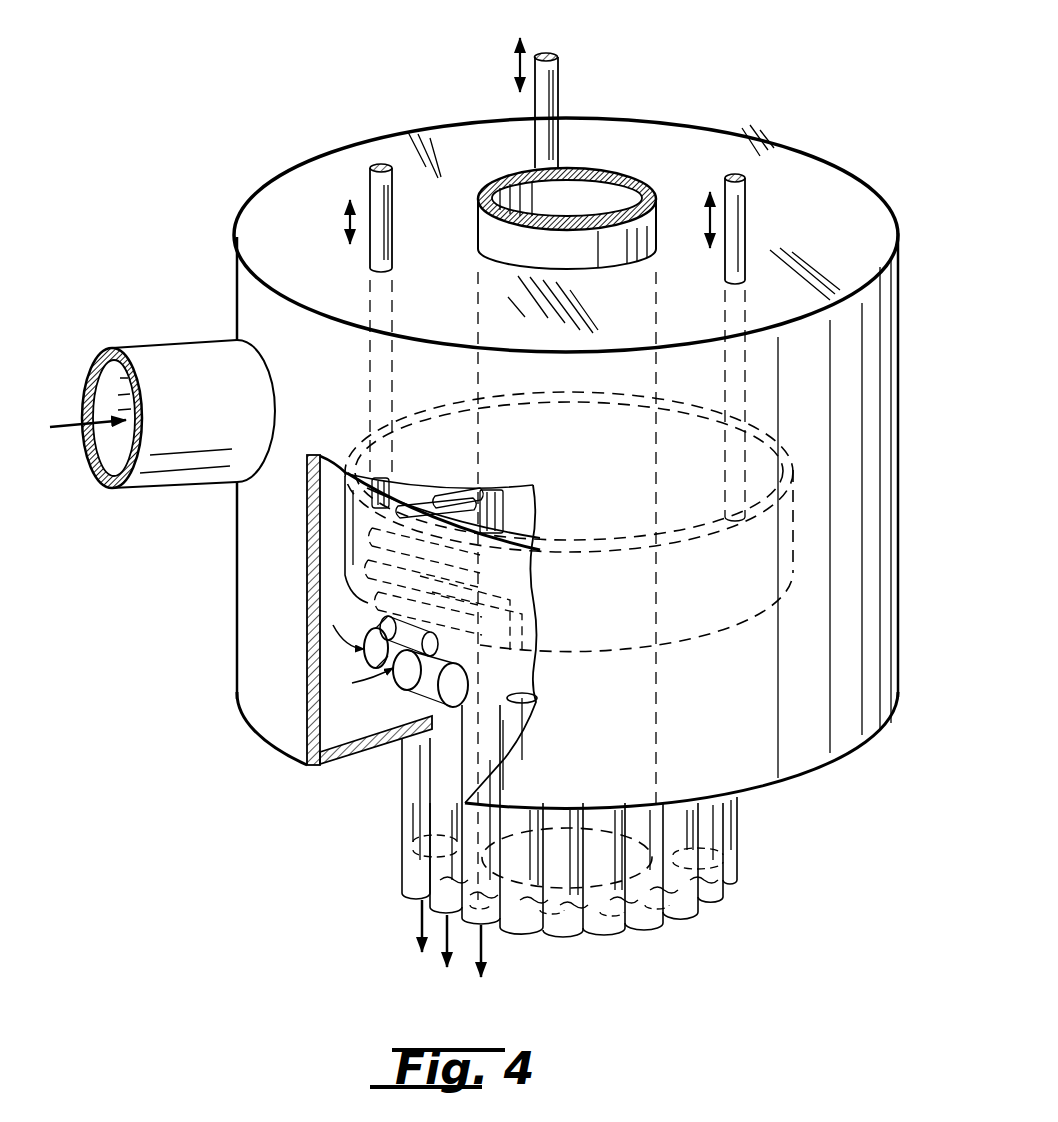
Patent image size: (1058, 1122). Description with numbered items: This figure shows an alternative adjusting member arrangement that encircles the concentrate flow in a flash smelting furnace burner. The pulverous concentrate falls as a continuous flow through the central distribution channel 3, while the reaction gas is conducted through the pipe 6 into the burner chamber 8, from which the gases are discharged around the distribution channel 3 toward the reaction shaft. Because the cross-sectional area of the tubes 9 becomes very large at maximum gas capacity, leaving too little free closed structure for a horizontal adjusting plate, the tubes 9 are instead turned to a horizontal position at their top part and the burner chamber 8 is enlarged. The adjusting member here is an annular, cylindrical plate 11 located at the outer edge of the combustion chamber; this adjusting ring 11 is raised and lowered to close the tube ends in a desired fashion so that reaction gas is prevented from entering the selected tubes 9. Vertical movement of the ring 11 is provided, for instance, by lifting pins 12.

The distribution channel 3 is at (603, 192).
The pipe 6 is at (168, 358).
The burner chamber 8 is at (218, 694).
The tubes 9 is at (510, 620).
The annular cylindrical plate 11 is at (360, 527).
The lifting pins 12 is at (381, 166).